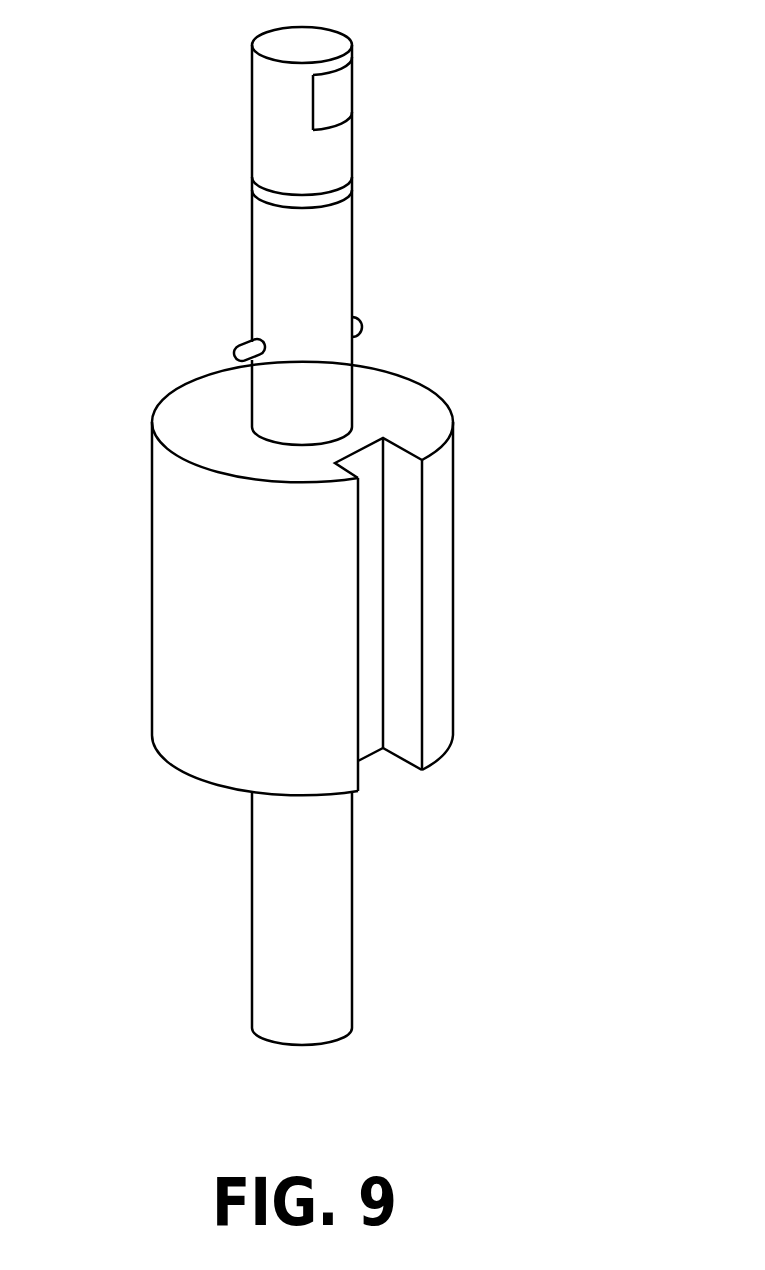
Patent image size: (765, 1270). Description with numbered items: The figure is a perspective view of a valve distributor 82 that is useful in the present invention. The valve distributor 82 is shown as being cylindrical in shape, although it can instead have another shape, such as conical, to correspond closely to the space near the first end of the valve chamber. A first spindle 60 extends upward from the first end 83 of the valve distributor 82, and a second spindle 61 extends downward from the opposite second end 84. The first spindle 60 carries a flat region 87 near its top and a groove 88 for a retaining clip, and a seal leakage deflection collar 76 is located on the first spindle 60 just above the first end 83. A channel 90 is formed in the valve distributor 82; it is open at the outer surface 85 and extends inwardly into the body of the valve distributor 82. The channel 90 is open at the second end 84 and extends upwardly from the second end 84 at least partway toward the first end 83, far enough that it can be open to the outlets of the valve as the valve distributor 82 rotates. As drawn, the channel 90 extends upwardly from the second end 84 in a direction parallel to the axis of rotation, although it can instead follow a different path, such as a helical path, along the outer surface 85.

The first spindle 60 is at (155, 269).
The second spindle 61 is at (252, 930).
The seal leakage deflection collar 76 is at (363, 323).
The valve distributor 82 is at (152, 592).
The first end 83 is at (220, 430).
The second end 84 is at (407, 767).
The outer surface 85 is at (437, 542).
The flat region 87 is at (331, 99).
The groove 88 is at (347, 182).
The channel 90 is at (380, 772).